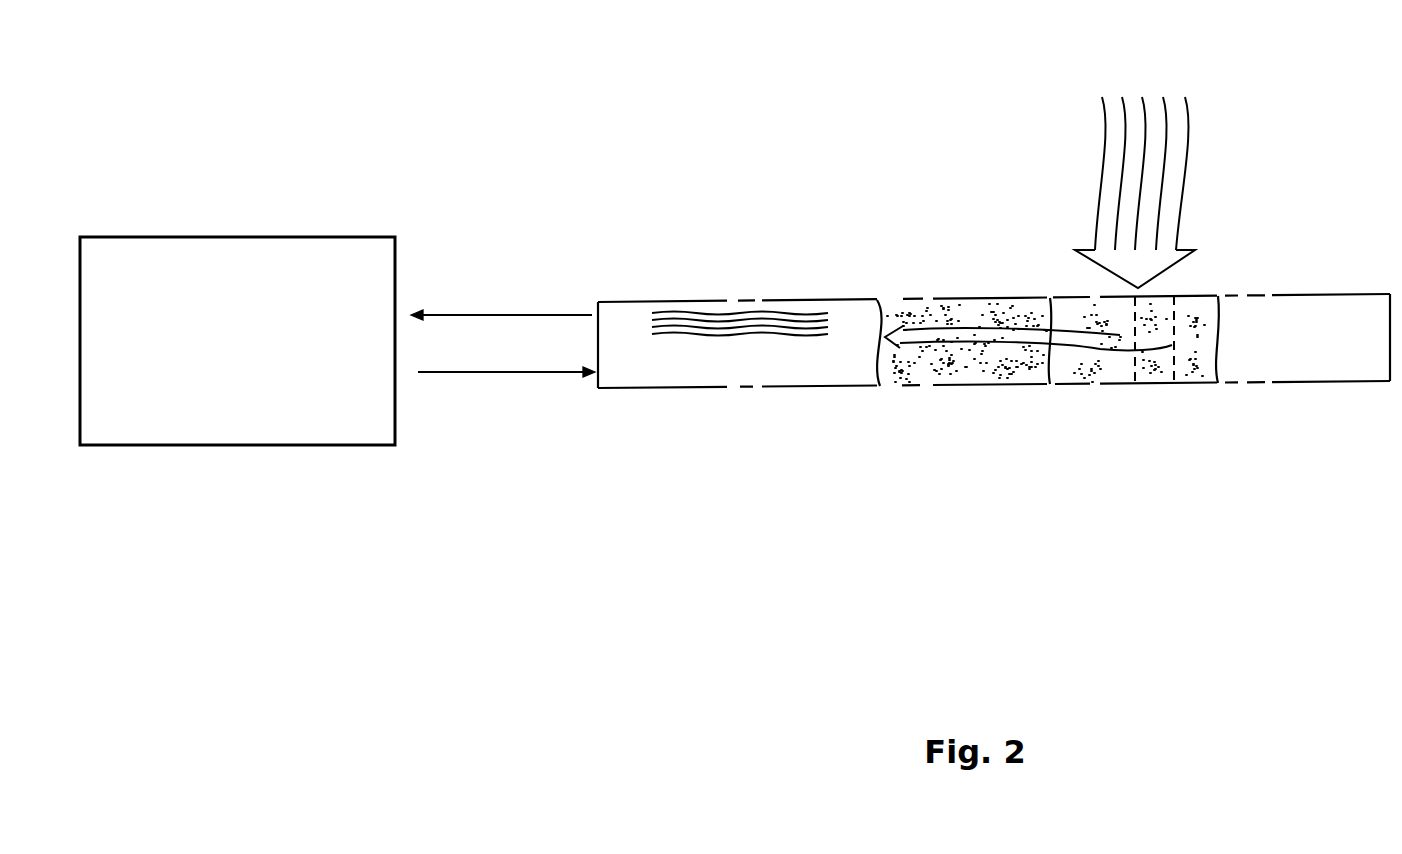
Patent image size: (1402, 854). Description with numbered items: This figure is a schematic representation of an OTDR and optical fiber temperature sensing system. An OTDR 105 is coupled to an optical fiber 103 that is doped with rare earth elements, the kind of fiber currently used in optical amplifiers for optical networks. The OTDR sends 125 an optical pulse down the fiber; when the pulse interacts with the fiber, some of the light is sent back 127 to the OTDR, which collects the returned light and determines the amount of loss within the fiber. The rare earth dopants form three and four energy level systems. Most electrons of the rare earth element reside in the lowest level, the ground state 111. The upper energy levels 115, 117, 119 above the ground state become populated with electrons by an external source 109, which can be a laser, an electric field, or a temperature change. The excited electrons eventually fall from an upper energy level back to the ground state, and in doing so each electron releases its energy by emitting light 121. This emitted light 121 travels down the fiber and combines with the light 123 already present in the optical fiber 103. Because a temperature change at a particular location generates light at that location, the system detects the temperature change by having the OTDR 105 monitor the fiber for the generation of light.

The optical fiber 103 is at (1348, 294).
The OTDR 105 is at (292, 445).
The external source 109 is at (1185, 122).
The ground state 111 is at (978, 381).
The upper energy level 115 is at (1103, 368).
The upper energy level 117 is at (1148, 362).
The upper energy level 119 is at (1193, 365).
The emitted light 121 is at (967, 328).
The light already in the optical fiber 123 is at (753, 313).
The sending of optical pulse 125 is at (517, 373).
The light sent back 127 is at (520, 312).